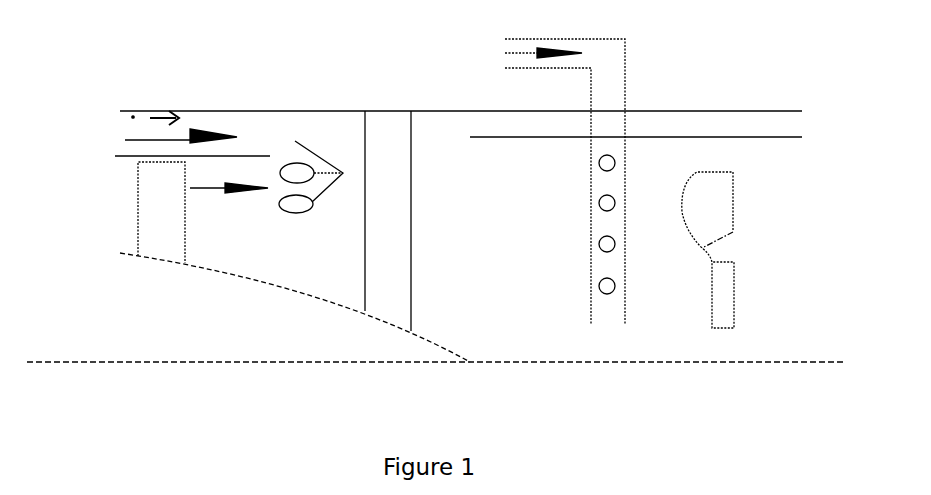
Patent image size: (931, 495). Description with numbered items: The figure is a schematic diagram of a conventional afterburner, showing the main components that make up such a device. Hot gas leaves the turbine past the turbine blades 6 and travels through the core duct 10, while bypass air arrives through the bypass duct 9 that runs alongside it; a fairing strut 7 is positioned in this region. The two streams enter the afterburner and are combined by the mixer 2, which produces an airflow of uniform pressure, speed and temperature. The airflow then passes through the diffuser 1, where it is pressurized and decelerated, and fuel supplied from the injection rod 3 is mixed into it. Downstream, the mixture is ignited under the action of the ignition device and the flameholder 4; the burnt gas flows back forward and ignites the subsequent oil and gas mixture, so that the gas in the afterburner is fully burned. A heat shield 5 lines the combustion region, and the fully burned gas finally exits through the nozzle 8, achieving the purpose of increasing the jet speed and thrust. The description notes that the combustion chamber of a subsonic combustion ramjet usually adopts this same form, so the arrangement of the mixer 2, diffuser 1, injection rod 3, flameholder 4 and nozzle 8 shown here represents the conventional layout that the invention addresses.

The diffuser 1 is at (457, 145).
The mixer 2 is at (322, 157).
The injection rod 3 is at (617, 90).
The flameholder 4 is at (715, 215).
The heat shield 5 is at (703, 137).
The turbine blades 6 is at (155, 205).
The fairing strut 7 is at (390, 218).
The nozzle 8 is at (607, 203).
The bypass duct 9 is at (185, 120).
The core duct 10 is at (130, 158).